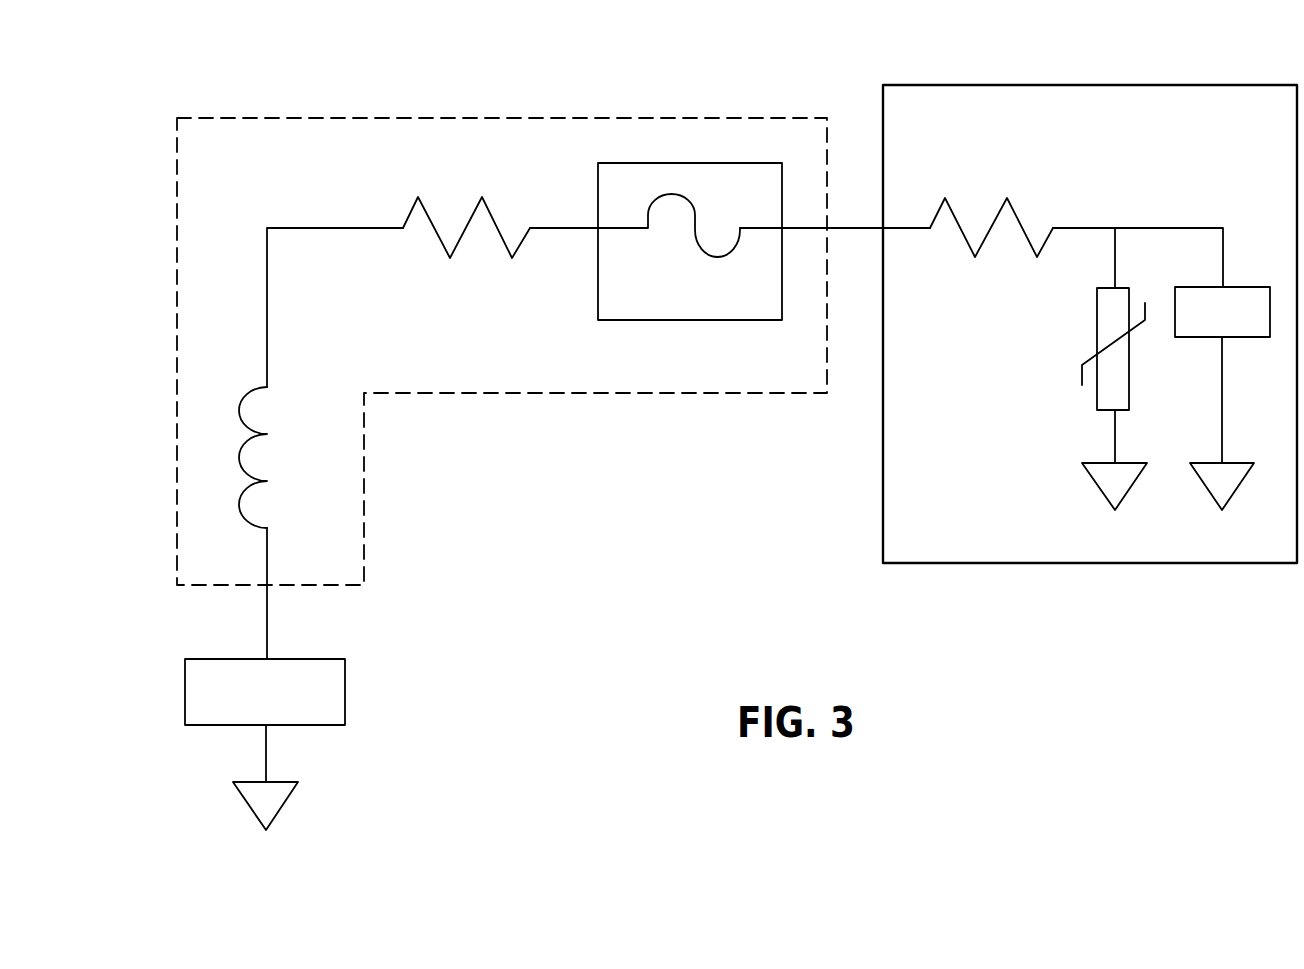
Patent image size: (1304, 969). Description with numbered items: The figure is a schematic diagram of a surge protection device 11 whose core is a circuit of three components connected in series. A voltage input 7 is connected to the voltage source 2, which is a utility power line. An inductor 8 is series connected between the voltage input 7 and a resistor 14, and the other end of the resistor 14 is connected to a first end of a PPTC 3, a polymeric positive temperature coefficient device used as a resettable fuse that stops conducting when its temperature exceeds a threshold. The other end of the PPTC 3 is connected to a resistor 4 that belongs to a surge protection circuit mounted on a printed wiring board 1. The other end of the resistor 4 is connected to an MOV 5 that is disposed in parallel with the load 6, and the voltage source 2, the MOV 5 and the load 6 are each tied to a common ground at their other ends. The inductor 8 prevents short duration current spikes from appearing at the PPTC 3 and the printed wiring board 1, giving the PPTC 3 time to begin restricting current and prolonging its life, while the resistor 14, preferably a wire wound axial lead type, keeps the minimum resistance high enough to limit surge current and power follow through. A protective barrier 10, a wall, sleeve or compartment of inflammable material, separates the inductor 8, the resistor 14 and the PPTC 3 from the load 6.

The printed wiring board 1 is at (1095, 85).
The voltage source 2 is at (185, 690).
The PPTC 3 is at (688, 320).
The resistor 4 is at (1027, 200).
The MOV 5 is at (1097, 396).
The load 6 is at (1248, 287).
The voltage input 7 is at (266, 625).
The inductor 8 is at (275, 412).
The protective barrier 10 is at (510, 118).
The surge protection device 11 is at (470, 498).
The resistor 14 is at (478, 262).